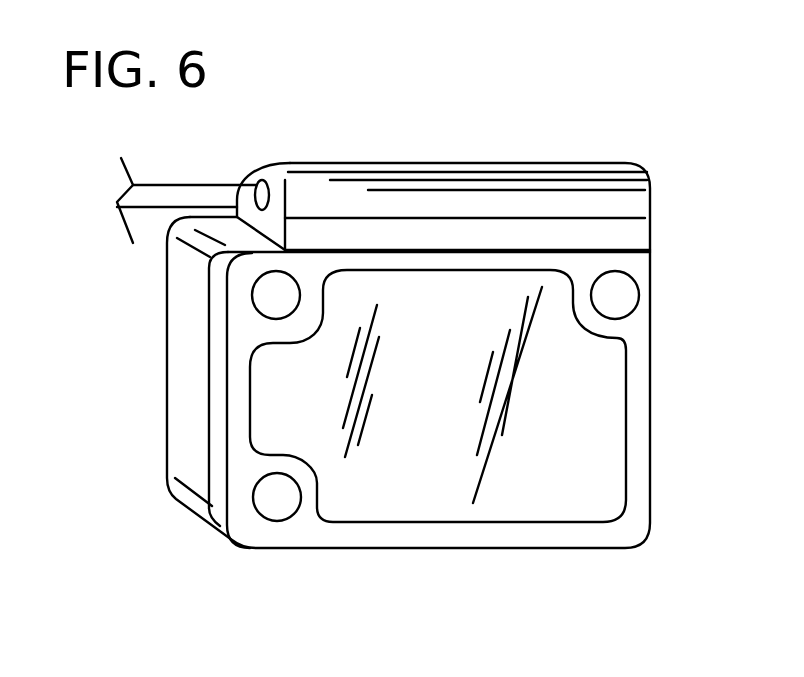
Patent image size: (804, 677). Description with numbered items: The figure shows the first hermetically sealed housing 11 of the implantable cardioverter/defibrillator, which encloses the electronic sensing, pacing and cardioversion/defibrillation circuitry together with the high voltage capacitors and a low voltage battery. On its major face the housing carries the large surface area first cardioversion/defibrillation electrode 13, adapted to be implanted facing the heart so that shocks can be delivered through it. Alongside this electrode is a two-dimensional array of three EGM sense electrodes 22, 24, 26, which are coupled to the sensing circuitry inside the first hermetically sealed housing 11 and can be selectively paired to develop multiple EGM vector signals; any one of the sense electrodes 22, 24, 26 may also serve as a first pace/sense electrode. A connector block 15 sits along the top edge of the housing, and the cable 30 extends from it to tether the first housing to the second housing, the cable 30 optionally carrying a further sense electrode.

The first hermetically sealed housing 11 is at (148, 466).
The first cardioversion/defibrillation electrode 13 is at (365, 500).
The connector block 15 is at (470, 177).
The EGM sense electrode 22 is at (287, 295).
The EGM sense electrode 24 is at (622, 298).
The EGM sense electrode 26 is at (282, 507).
The cable 30 is at (172, 183).